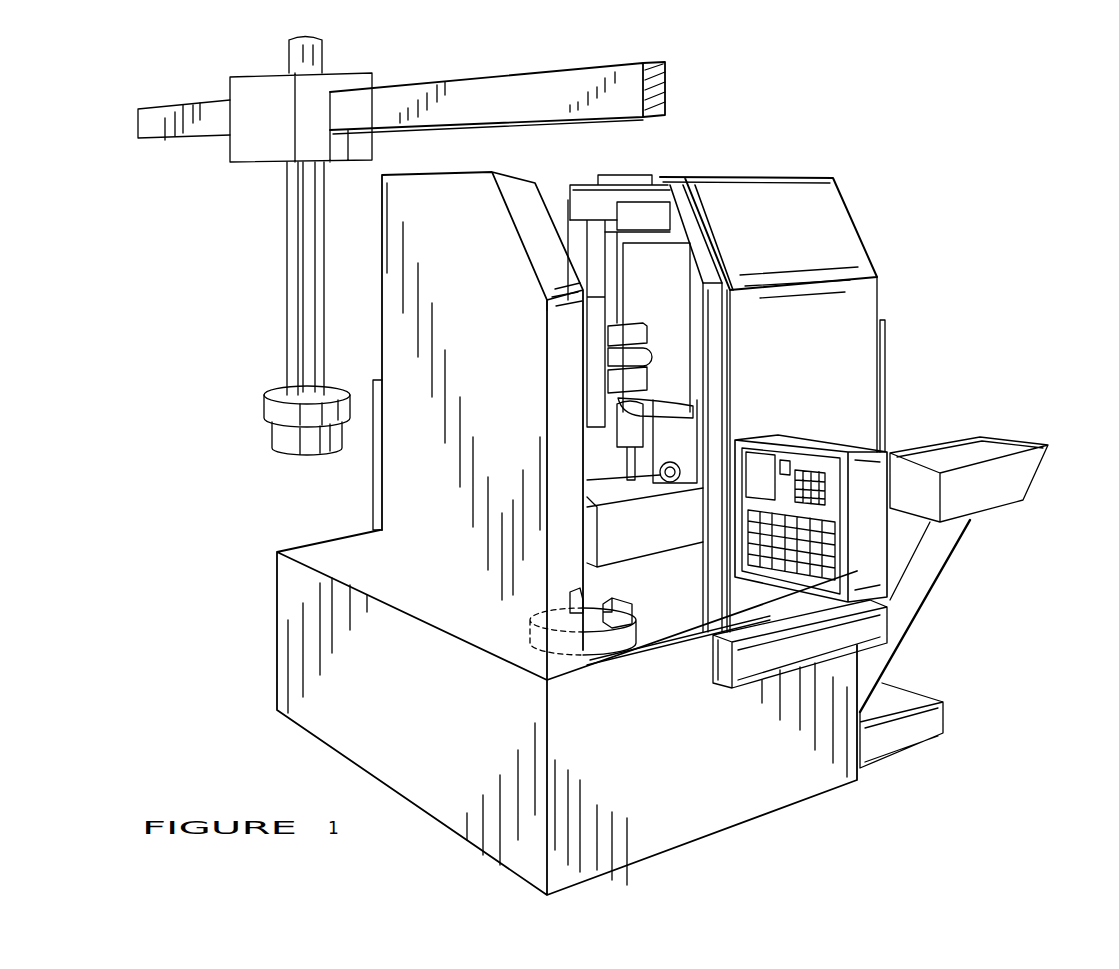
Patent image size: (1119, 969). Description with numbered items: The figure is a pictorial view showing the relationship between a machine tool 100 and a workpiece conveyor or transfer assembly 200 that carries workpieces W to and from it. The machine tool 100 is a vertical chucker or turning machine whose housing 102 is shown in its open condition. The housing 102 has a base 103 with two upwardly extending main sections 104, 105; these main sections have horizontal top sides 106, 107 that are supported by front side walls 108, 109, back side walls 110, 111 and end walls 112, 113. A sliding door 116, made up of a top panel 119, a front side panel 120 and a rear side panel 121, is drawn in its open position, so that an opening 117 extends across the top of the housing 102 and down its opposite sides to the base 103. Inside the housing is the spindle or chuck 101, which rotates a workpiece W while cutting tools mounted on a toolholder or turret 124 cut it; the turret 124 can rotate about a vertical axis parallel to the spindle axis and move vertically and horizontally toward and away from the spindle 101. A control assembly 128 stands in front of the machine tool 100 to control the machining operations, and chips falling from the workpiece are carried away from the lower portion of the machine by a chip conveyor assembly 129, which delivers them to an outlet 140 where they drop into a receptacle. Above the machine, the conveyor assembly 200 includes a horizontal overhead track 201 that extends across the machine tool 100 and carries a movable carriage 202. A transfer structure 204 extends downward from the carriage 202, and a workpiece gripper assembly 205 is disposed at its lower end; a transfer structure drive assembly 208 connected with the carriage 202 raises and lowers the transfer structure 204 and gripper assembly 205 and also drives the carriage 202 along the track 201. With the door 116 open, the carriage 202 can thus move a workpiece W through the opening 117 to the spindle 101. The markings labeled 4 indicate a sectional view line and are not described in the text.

The section line 4- 4 is at (832, 148).
The machine tool 100 is at (980, 197).
The spindle 101 is at (607, 645).
The housing 102 is at (890, 282).
The base 103 is at (422, 782).
The main section 104 is at (858, 214).
The main section 105 is at (372, 500).
The top side 106 is at (723, 172).
The top side 107 is at (477, 173).
The front side wall 108 is at (853, 383).
The front side wall 109 is at (558, 342).
The back side wall 110 is at (665, 176).
The back side wall 111 is at (380, 285).
The end wall 112 is at (842, 200).
The end wall 113 is at (430, 587).
The sliding door 116 is at (730, 337).
The opening 117 is at (557, 187).
The top panel 119 is at (627, 177).
The front side panel 120 is at (713, 383).
The rear side panel 121 is at (570, 202).
The turret 124 is at (625, 410).
The control assembly 128 is at (872, 542).
The chip conveyor assembly 129 is at (922, 638).
The outlet 140 is at (1002, 483).
The workpiece conveyor assembly 200 is at (438, 66).
The overhead track 201 is at (495, 88).
The carriage 202 is at (265, 92).
The transfer structure 204 is at (302, 298).
The workpiece gripper assembly 205 is at (278, 413).
The transfer structure drive assembly 208 is at (323, 53).
The workpiece W is at (287, 438).